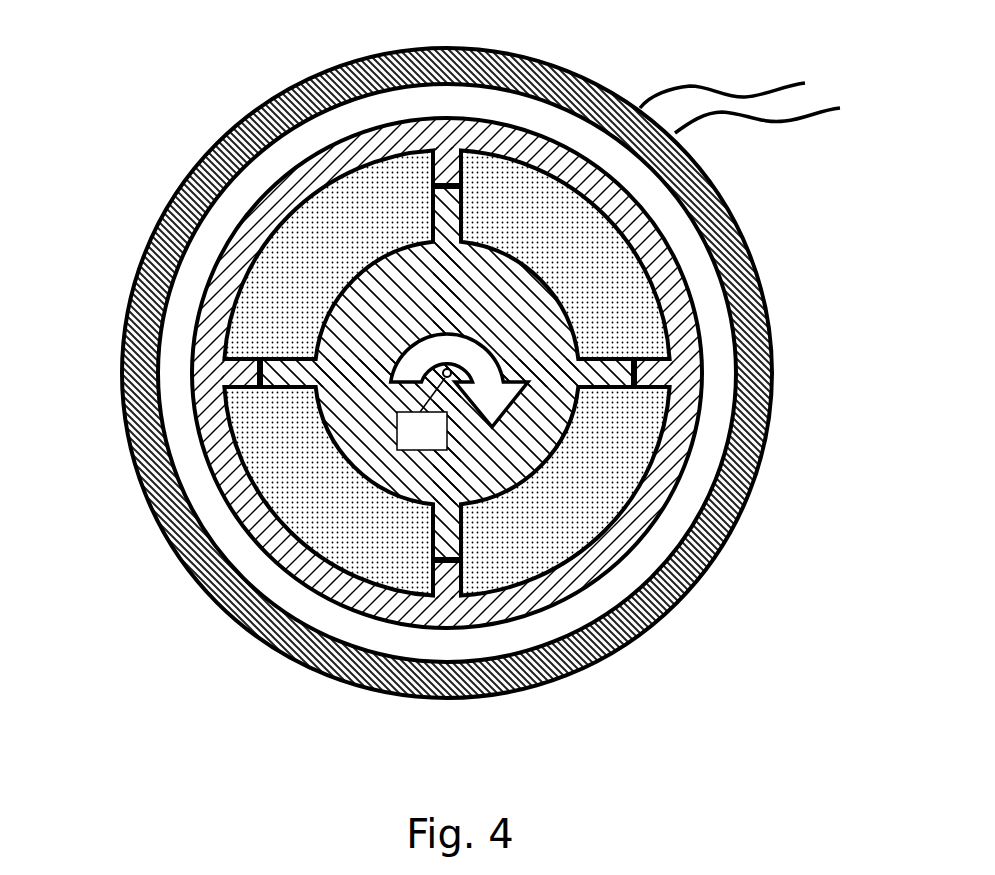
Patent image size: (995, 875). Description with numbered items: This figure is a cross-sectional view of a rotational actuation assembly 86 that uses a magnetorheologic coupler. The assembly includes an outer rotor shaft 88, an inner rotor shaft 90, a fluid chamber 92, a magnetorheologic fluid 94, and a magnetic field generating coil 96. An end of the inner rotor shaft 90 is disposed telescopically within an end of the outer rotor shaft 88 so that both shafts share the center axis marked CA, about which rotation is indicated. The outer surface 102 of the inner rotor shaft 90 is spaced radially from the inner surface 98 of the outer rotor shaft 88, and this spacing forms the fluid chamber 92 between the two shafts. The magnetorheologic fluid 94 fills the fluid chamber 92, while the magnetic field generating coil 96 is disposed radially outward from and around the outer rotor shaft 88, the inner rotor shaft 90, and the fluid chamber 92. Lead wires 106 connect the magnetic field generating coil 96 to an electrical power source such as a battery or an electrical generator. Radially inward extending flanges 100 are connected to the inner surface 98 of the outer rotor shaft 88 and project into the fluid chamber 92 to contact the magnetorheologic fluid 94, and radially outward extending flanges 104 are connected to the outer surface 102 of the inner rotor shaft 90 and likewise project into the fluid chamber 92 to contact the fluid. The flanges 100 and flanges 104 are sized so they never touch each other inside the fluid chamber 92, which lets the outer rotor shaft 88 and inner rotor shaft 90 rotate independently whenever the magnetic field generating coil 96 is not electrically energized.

The rotational actuation assembly 86 is at (235, 98).
The outer rotor shaft 88 is at (643, 232).
The inner rotor shaft 90 is at (575, 458).
The fluid chamber 92 is at (503, 545).
The magnetorheologic fluid 94 is at (298, 520).
The magnetic field generating coil 96 is at (755, 423).
The inner surface 98 is at (523, 162).
The radially inward extending flanges 100 is at (447, 172).
The outer surface 102 is at (535, 487).
The radially outward extending flanges 104 is at (292, 350).
The lead wires 106 is at (740, 98).